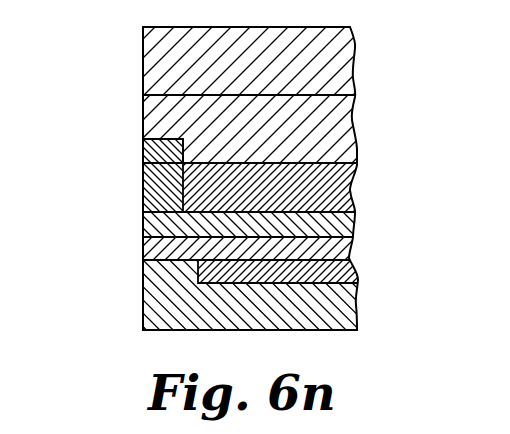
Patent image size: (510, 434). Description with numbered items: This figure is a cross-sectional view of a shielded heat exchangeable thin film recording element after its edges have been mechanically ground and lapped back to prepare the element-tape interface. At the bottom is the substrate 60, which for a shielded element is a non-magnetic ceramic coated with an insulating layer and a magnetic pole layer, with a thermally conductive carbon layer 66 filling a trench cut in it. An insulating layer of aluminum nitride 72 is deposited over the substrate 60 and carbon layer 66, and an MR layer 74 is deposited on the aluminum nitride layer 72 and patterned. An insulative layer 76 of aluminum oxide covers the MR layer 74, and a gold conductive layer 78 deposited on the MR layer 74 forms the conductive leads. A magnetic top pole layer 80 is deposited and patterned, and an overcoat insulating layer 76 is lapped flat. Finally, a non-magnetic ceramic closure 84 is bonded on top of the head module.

The substrate 60 is at (167, 298).
The thermally conductive carbon layer 66 is at (343, 275).
The aluminum nitride insulating layer 72 is at (162, 250).
The MR layer 74 is at (180, 227).
The insulative layer 76 is at (167, 107).
The conductive layer 78 is at (350, 190).
The magnetic top pole layer 80 is at (167, 148).
The non-magnetic ceramic closure 84 is at (167, 67).